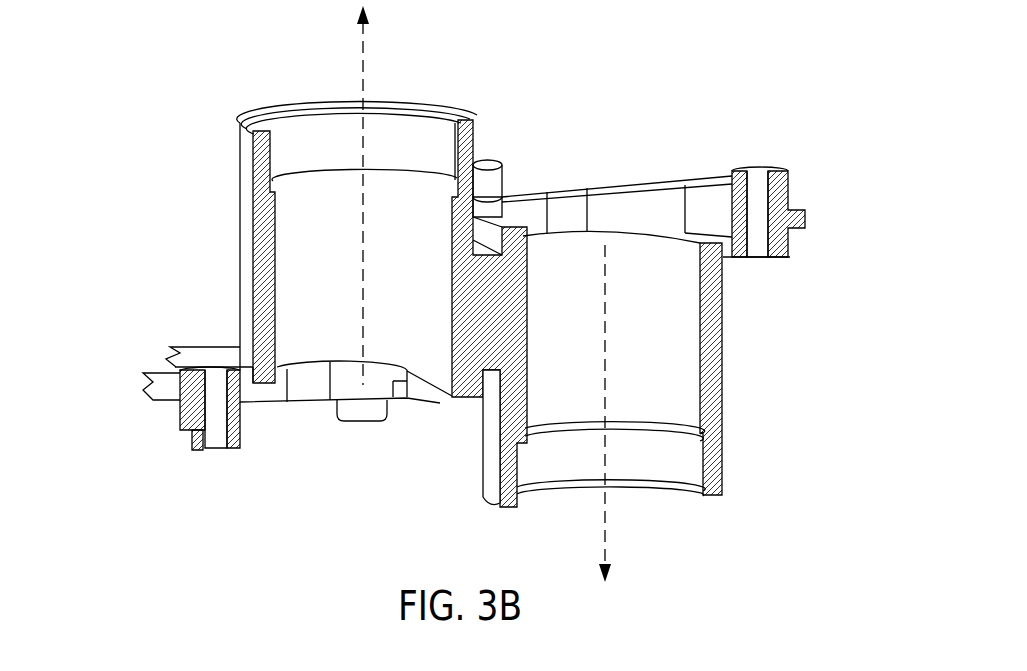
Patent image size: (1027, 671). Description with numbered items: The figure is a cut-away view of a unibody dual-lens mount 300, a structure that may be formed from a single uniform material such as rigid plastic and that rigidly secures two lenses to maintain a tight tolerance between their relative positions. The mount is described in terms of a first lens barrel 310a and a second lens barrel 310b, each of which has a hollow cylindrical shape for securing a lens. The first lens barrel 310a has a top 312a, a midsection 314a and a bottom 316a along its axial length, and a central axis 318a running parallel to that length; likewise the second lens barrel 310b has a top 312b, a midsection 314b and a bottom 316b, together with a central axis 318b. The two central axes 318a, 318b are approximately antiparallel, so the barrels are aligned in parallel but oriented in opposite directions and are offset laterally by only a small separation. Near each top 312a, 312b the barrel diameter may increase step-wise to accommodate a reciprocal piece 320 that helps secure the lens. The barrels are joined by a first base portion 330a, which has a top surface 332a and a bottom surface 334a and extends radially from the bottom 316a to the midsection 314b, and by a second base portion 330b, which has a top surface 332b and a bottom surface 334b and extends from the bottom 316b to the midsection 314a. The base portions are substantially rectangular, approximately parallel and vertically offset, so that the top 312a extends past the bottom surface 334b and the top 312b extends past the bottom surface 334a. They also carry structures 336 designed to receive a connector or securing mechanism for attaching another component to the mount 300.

The unibody dual-lens mount 300 is at (146, 38).
The first lens barrel 310a is at (128, 110).
The second lens barrel 310b is at (830, 260).
The top of the first lens barrel 312a is at (240, 138).
The top of the second lens barrel 312b is at (717, 478).
The midsection of the first lens barrel 314a is at (238, 248).
The midsection of the second lens barrel 314b is at (723, 373).
The bottom of the first lens barrel 316a is at (230, 345).
The bottom of the second lens barrel 316b is at (723, 273).
The central axis of the first lens barrel 318a is at (346, 318).
The central axis of the second lens barrel 318b is at (611, 307).
The reciprocal piece 320 is at (300, 105).
The first base portion 330a is at (136, 389).
The second base portion 330b is at (826, 217).
The top surface of the first base portion 332a is at (174, 340).
The top surface of the second base portion 332b is at (782, 260).
The bottom surface of the first base portion 334a is at (182, 440).
The bottom surface of the second base portion 334b is at (688, 165).
The structures 336 is at (482, 162).